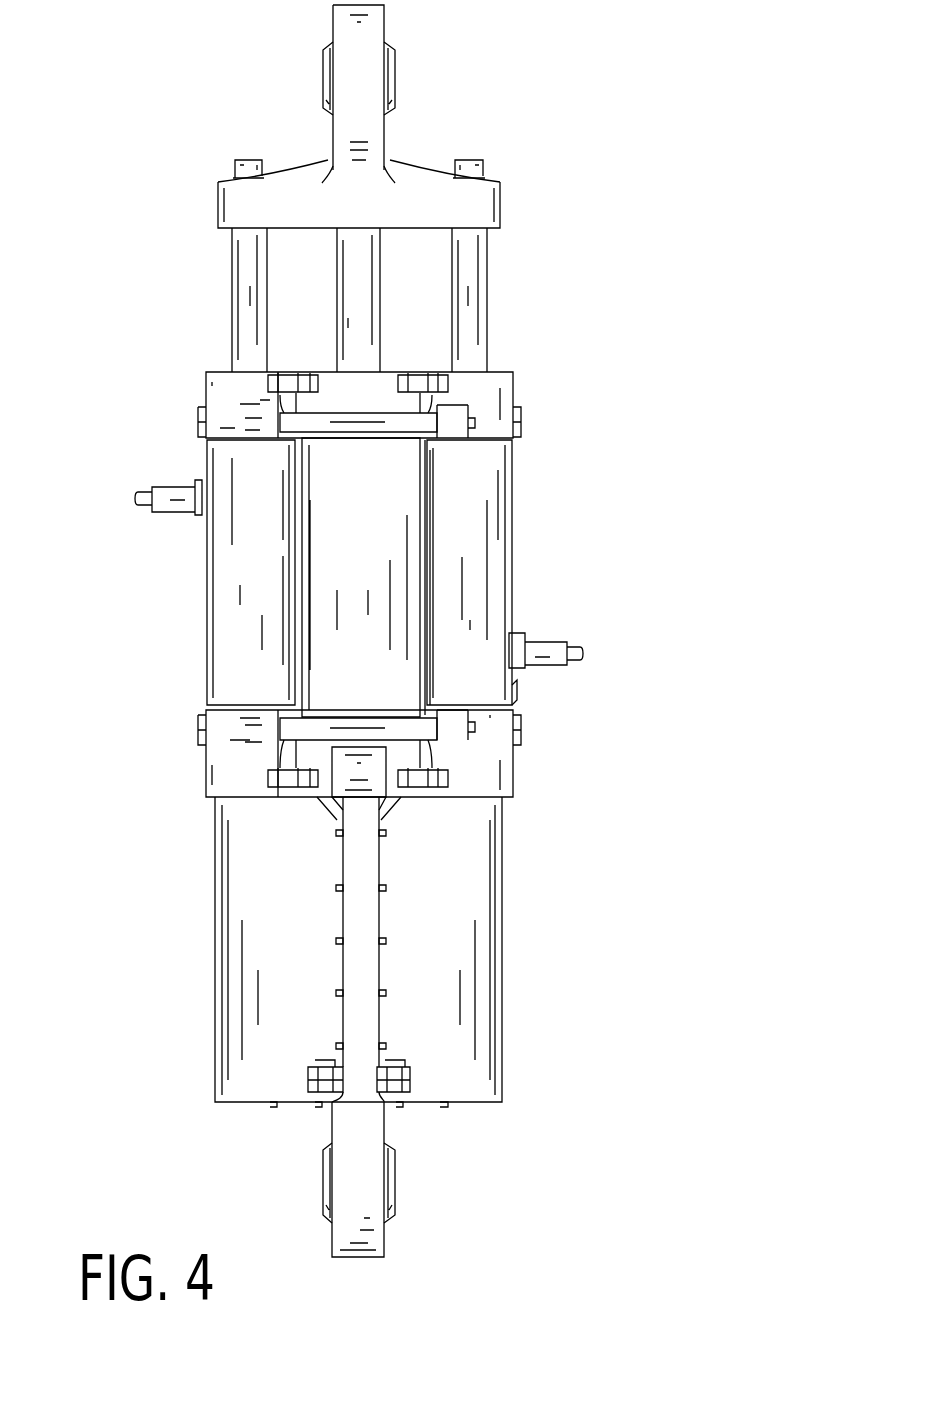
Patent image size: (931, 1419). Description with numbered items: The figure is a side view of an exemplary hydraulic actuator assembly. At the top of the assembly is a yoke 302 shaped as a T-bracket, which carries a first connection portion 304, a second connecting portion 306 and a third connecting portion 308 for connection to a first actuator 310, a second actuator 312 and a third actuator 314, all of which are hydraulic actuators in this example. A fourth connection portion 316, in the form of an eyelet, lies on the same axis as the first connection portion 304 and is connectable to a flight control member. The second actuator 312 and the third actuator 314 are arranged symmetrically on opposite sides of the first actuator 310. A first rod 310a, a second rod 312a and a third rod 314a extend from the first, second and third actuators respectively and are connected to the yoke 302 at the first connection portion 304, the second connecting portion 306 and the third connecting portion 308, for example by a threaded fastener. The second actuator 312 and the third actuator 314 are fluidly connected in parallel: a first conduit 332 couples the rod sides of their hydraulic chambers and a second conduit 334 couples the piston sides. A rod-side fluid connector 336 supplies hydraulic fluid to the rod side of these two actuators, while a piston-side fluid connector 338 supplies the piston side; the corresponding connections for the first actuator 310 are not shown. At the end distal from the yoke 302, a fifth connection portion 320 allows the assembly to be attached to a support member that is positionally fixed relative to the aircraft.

The yoke 302 is at (403, 170).
The first connection portion 304 is at (385, 215).
The second connecting portion 306 is at (237, 205).
The third connecting portion 308 is at (477, 203).
The first actuator 310 is at (323, 625).
The first rod 310a is at (383, 295).
The second actuator 312 is at (208, 592).
The second rod 312a is at (237, 287).
The third actuator 314 is at (510, 583).
The third rod 314a is at (485, 333).
The fourth connection portion 316 is at (325, 44).
The fifth connection portion 320 is at (395, 1195).
The first conduit 332 is at (333, 432).
The second conduit 334 is at (402, 738).
The rod-side fluid connector 336 is at (163, 514).
The piston-side fluid connector 338 is at (543, 668).